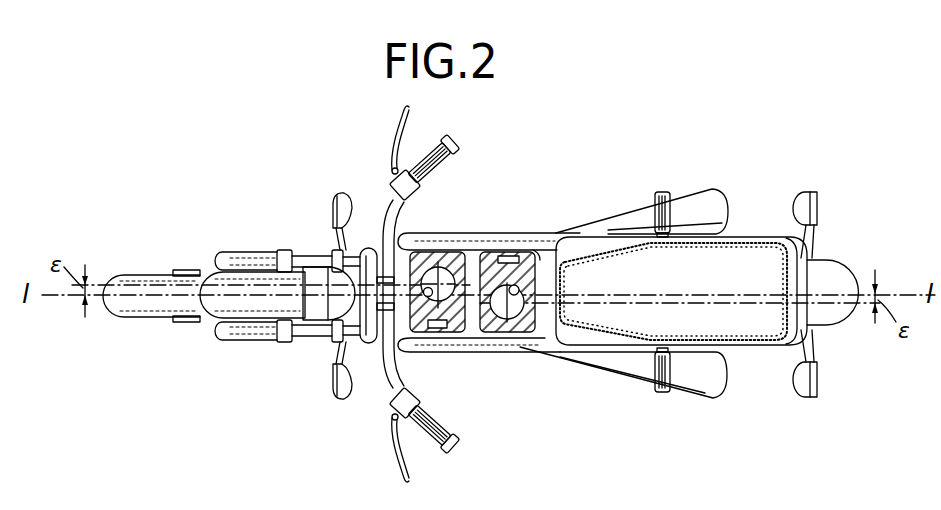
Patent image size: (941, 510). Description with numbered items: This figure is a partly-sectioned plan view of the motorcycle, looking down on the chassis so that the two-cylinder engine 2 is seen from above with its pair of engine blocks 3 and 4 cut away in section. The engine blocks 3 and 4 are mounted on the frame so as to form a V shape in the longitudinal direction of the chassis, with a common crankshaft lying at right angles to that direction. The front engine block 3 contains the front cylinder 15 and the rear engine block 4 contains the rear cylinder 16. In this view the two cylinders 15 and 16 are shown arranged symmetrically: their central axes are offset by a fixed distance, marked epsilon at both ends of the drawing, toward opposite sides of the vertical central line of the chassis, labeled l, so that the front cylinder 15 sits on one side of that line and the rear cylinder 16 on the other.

The two-cylinder engine 2 is at (483, 226).
The front engine block 3 is at (455, 252).
The rear engine block 4 is at (508, 256).
The front cylinder 15 is at (427, 296).
The rear cylinder 16 is at (519, 290).